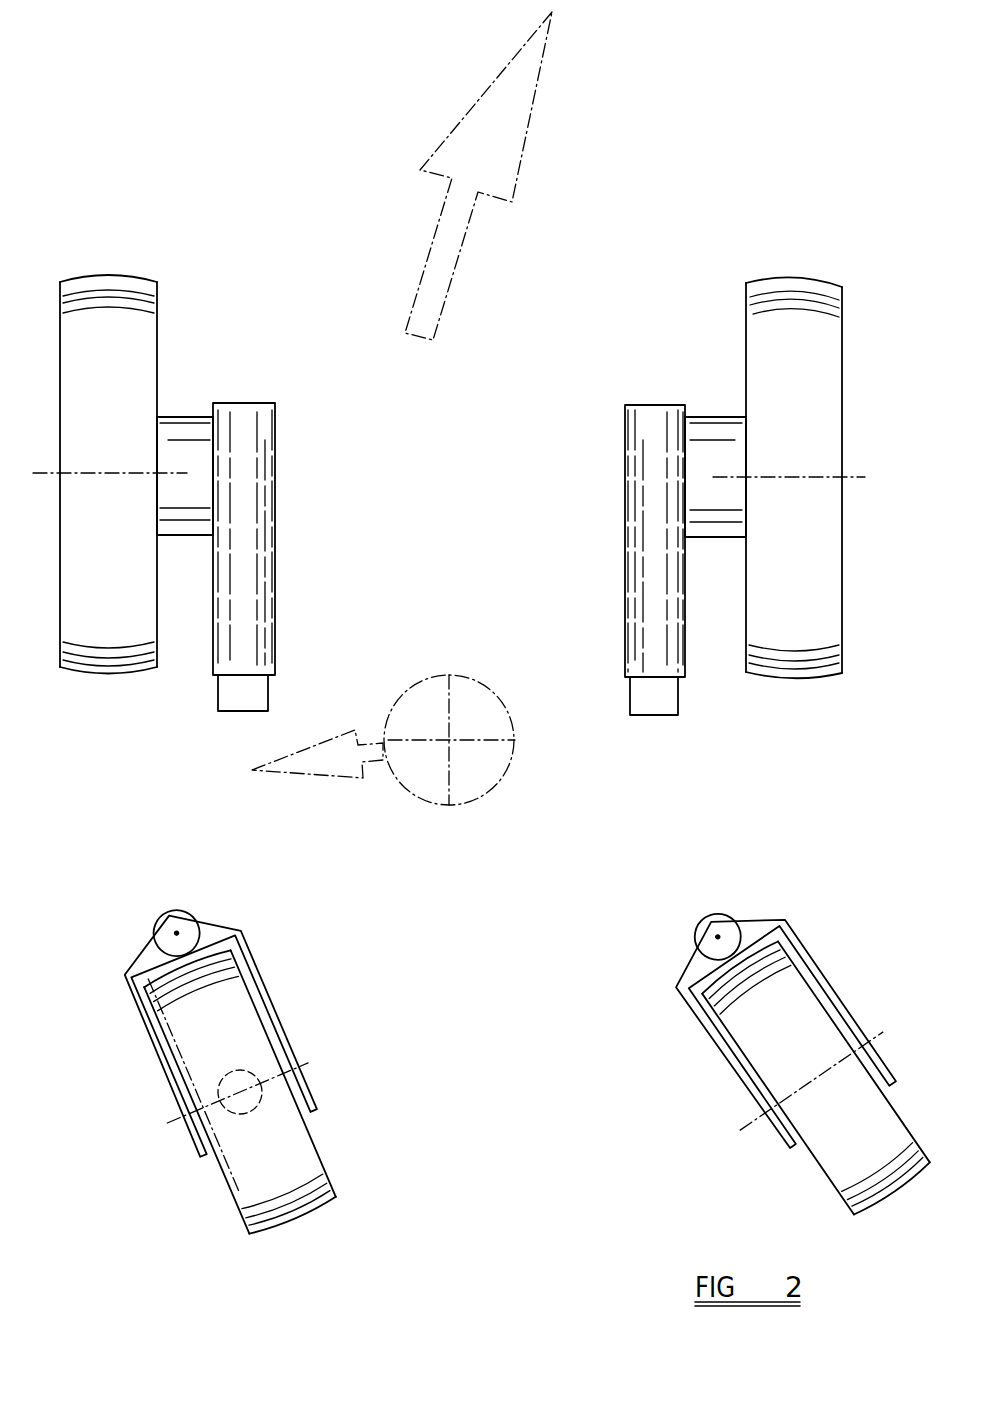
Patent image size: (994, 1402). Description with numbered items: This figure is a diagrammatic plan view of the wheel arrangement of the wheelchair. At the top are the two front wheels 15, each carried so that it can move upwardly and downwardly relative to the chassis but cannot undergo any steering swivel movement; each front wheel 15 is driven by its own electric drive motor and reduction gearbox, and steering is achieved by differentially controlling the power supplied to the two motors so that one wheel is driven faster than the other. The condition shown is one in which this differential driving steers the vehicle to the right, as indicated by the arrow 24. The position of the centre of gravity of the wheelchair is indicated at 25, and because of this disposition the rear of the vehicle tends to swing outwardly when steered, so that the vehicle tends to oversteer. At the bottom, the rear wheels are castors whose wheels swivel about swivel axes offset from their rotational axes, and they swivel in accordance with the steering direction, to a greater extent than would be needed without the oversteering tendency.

The front wheels 15 is at (138, 264).
The arrow 24 is at (507, 143).
The centre of gravity 25 is at (449, 740).